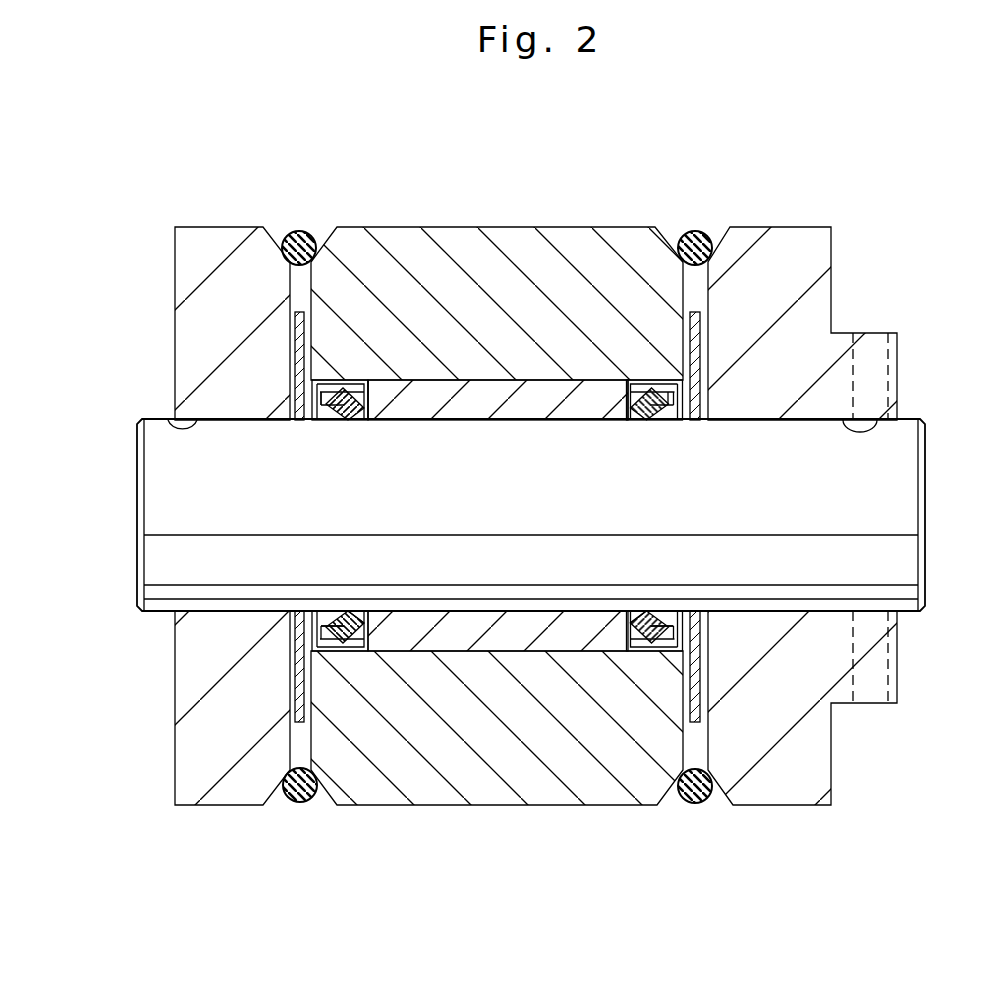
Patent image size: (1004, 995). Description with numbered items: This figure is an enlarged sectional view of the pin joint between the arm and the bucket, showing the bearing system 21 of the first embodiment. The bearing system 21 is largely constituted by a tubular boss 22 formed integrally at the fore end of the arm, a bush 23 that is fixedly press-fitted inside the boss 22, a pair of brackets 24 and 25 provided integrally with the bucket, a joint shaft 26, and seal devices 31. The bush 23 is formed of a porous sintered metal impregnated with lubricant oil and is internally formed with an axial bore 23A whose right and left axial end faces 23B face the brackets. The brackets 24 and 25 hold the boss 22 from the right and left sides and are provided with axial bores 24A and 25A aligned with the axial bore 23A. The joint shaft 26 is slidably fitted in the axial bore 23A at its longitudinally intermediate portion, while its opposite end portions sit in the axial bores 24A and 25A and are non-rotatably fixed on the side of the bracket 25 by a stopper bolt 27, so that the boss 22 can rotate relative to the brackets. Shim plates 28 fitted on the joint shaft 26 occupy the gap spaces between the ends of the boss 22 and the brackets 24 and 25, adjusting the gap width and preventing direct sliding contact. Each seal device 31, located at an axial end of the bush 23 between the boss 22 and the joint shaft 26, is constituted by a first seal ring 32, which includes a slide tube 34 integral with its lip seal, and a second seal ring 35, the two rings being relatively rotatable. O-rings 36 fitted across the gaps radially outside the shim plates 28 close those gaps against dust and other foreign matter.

The bearing system 21 is at (877, 268).
The boss 22 is at (497, 238).
The bush 23 is at (543, 395).
The axial bore 23A is at (463, 608).
The axial end faces 23B is at (372, 380).
The bracket 24 is at (219, 228).
The axial bore 24A is at (170, 422).
The bracket 25 is at (790, 237).
The axial bore 25A is at (873, 424).
The joint shaft 26 is at (165, 491).
The stopper bolt 27 is at (890, 667).
The shim plate 28 is at (301, 698).
The seal device 31 is at (350, 368).
The first seal ring 32 is at (357, 645).
The slide tube 34 is at (337, 648).
The second seal ring 35 is at (332, 388).
The O-ring 36 is at (297, 230).